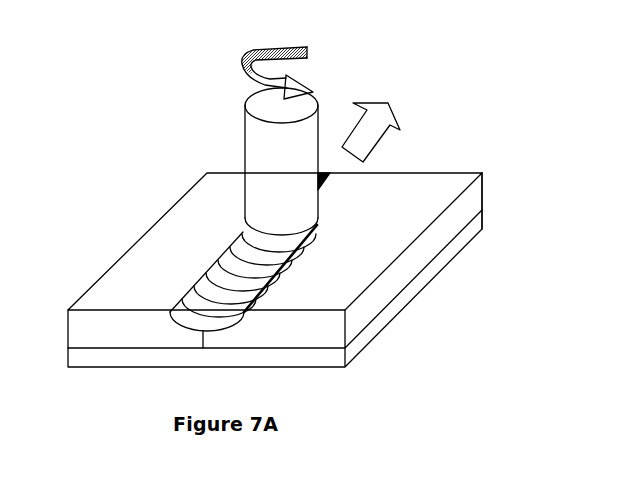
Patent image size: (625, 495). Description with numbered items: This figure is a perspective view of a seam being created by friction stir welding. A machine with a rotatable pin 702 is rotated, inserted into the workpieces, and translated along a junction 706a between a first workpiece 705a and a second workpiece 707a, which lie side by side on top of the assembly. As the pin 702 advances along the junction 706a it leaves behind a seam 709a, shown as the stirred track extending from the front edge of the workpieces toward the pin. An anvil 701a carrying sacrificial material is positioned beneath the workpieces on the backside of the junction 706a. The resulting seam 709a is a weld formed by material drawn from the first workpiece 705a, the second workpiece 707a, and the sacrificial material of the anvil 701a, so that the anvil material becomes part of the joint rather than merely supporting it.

The rotatable pin 702 is at (245, 147).
The junction 706a is at (330, 173).
The seam 709a is at (227, 257).
The first workpiece 705a is at (108, 272).
The second workpiece 707a is at (482, 173).
The anvil 701a is at (397, 314).